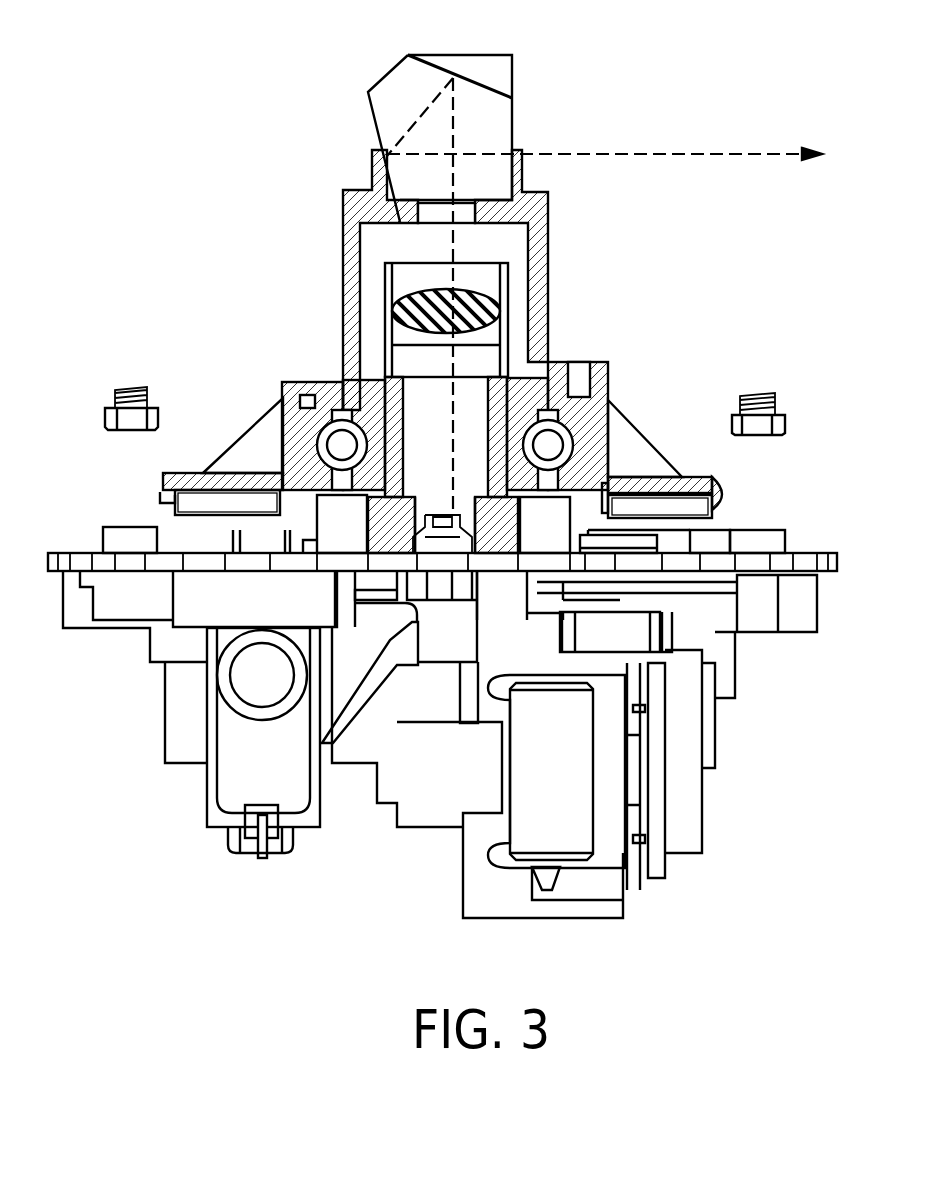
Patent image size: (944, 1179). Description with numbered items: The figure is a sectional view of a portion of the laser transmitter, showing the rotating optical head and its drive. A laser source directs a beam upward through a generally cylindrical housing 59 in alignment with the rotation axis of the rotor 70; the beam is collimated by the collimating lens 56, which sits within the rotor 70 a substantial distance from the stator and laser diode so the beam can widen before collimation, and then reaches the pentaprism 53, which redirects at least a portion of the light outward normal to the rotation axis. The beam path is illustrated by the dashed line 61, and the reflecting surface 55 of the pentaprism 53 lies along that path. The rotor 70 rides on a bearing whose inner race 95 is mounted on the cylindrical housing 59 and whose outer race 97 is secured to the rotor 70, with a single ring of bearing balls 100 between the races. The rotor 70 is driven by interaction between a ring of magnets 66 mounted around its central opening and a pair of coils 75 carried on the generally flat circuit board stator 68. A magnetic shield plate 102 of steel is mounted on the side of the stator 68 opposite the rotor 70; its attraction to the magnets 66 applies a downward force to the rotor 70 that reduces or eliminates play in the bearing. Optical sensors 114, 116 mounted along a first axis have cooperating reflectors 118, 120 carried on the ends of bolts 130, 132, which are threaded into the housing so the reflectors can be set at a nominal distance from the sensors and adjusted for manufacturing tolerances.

The pentaprism 53 is at (500, 128).
The reflecting surface of prism 55 is at (470, 72).
The collimating lens 56 is at (452, 296).
The generally cylindrical housing 59 is at (390, 390).
The dashed line 61 is at (423, 110).
The magnets 66 is at (168, 488).
The circuit board stator 68 is at (803, 563).
The rotor 70 is at (635, 485).
The coils 75 is at (713, 537).
The inner race 95 is at (363, 410).
The outer race 97 is at (317, 415).
The bearing balls 100 is at (335, 447).
The magnetic shield plate 102 is at (698, 598).
The optical sensor 114 is at (120, 527).
The optical sensor 116 is at (763, 537).
The reflector 118 is at (103, 417).
The reflector 120 is at (788, 428).
The bolt 130 is at (115, 395).
The bolt 132 is at (778, 400).